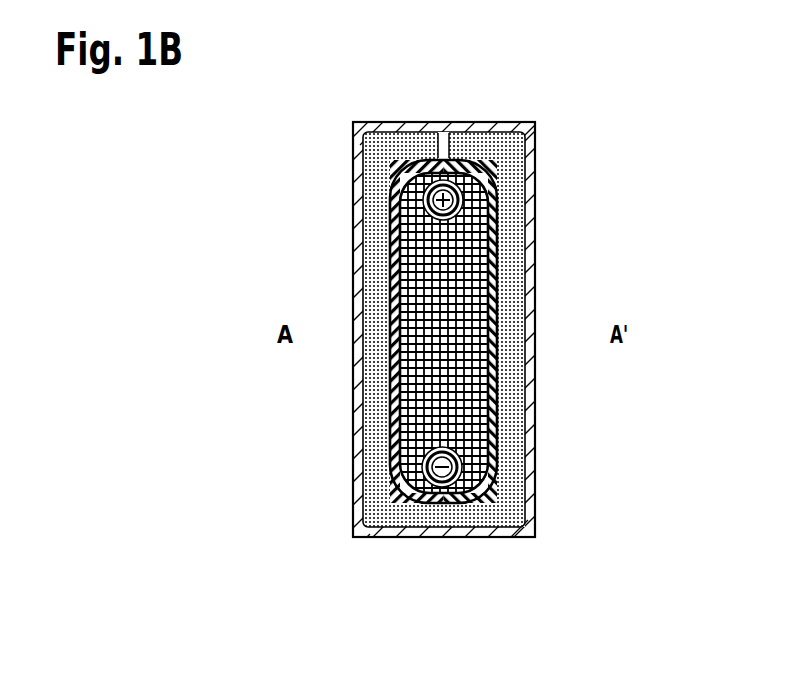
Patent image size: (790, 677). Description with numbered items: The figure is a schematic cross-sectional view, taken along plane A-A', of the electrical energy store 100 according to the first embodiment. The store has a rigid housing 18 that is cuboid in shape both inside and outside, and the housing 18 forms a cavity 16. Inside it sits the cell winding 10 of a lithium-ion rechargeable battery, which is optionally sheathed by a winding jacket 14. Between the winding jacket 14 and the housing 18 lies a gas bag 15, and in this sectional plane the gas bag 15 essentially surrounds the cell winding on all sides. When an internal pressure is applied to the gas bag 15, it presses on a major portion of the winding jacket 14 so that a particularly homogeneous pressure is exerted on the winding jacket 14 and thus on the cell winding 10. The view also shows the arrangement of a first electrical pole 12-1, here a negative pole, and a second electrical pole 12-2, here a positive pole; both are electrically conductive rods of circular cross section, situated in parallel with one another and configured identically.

The electrical energy store 100 is at (163, 135).
The cell winding 10 is at (448, 399).
The first electrical pole 12-1 is at (453, 190).
The second electrical pole 12-2 is at (453, 458).
The winding jacket 14 is at (494, 292).
The gas bag 15 is at (370, 523).
The cavity 16 is at (507, 152).
The housing 18 is at (527, 502).